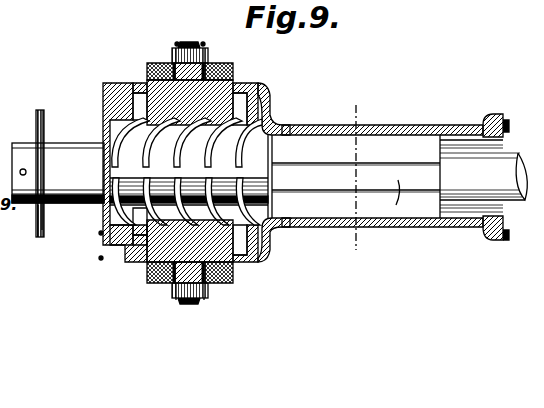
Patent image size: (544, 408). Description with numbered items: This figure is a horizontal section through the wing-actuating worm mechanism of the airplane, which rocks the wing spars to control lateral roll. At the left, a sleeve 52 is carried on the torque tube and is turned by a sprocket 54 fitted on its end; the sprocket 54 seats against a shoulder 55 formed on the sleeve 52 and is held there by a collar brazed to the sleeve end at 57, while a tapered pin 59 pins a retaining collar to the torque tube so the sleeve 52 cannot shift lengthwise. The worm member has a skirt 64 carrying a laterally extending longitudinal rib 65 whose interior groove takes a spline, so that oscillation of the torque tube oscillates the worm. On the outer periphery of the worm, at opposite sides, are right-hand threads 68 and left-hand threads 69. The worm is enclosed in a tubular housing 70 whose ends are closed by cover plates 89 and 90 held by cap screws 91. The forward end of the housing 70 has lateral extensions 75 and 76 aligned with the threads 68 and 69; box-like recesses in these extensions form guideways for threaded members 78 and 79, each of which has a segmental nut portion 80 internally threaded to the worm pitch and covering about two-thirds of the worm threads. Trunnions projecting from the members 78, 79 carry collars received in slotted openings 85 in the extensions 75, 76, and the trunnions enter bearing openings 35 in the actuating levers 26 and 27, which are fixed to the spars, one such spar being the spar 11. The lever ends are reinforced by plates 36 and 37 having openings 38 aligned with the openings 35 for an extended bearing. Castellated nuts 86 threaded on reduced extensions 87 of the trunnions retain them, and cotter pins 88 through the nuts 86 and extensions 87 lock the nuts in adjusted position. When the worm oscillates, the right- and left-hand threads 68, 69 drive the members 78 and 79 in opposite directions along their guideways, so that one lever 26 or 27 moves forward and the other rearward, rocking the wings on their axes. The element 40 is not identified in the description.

The spar 11 is at (359, 176).
The actuating lever 26 is at (148, 280).
The actuating lever 27 is at (233, 70).
The opening 35 is at (220, 283).
The reinforcing plate 36 is at (146, 256).
The reinforcing plate 37 is at (165, 284).
The opening 38 is at (147, 72).
The rod 40 is at (470, 202).
The sleeve 52 is at (87, 152).
The sprocket 54 is at (44, 134).
The shoulder 55 is at (44, 206).
The brazed joint 57 is at (38, 206).
The tapered pin 59 is at (23, 168).
The skirt 64 is at (417, 148).
The longitudinal rib 65 is at (393, 218).
The right-hand thread 68 is at (264, 230).
The left-hand thread 69 is at (266, 108).
The tubular housing 70 is at (288, 126).
The lateral extension 75 is at (250, 86).
The lateral extension 76 is at (150, 256).
The threaded member 78 is at (150, 100).
The threaded member 79 is at (147, 245).
The segmental nut portion 80 is at (185, 306).
The slotted opening 85 is at (235, 262).
The castellated nut 86 is at (172, 54).
The reduced extension 87 is at (172, 60).
The cotter pin 88 is at (200, 43).
The cover plate 89 is at (103, 232).
The cover plate 90 is at (509, 128).
The cap screw 91 is at (509, 236).